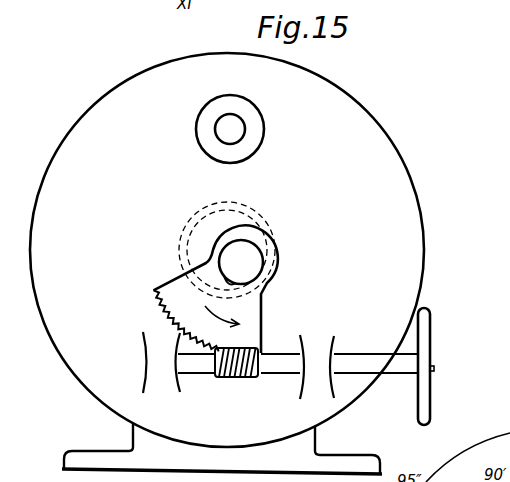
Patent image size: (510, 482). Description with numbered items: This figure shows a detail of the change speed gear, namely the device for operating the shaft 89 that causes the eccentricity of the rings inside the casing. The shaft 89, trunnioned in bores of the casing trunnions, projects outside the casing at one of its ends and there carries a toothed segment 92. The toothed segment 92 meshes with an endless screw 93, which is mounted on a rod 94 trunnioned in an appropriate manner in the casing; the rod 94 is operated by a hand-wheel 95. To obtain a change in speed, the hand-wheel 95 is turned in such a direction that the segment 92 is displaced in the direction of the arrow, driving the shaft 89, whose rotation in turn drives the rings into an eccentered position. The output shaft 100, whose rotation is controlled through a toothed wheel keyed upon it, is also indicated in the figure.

The output shaft 100 is at (229, 128).
The shaft 89 is at (248, 260).
The toothed segment 92 is at (185, 308).
The endless screw 93 is at (243, 377).
The rod 94 is at (363, 368).
The hand-wheel 95 is at (421, 329).